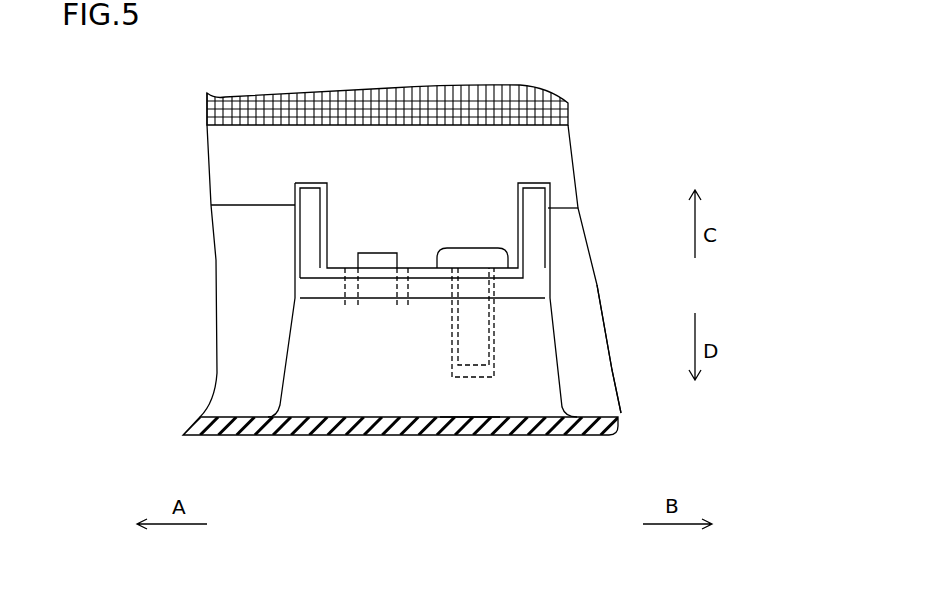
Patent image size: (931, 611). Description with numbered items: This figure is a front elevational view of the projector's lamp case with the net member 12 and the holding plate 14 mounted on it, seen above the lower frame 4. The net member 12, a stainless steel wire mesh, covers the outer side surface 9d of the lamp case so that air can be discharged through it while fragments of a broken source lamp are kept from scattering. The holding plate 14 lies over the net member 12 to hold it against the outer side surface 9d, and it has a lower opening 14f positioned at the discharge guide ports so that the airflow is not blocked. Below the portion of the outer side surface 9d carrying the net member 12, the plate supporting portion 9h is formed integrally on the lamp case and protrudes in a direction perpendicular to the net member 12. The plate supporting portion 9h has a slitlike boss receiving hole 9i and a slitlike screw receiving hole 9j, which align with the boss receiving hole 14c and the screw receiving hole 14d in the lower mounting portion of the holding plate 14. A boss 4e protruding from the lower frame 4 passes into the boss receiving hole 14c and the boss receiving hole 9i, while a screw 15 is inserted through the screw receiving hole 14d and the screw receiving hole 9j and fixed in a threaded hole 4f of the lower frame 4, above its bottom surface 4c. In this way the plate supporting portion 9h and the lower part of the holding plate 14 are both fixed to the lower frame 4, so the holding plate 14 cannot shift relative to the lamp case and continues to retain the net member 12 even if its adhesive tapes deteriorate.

The lower frame 4 is at (485, 437).
The bottom surface 4c is at (600, 412).
The boss 4e is at (387, 255).
The threaded hole 4f is at (467, 377).
The outer side surface 9d is at (578, 292).
The plate supporting portion 9h is at (520, 293).
The boss receiving hole 9i is at (355, 290).
The screw receiving hole 9j is at (455, 305).
The net member 12 is at (478, 112).
The holding plate 14 is at (565, 172).
The boss receiving hole 14c is at (352, 275).
The screw receiving hole 14d is at (480, 272).
The lower opening 14f is at (207, 112).
The screw 15 is at (467, 262).